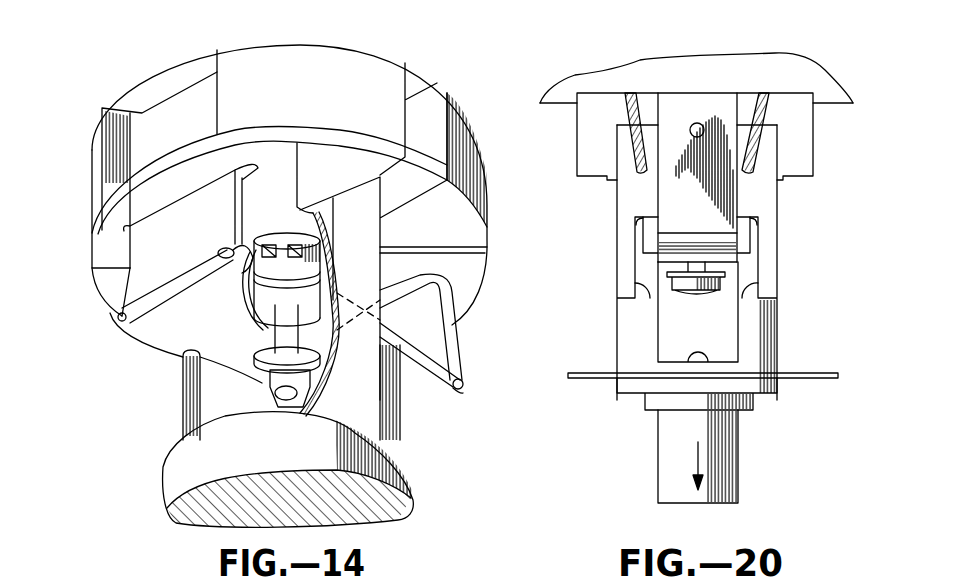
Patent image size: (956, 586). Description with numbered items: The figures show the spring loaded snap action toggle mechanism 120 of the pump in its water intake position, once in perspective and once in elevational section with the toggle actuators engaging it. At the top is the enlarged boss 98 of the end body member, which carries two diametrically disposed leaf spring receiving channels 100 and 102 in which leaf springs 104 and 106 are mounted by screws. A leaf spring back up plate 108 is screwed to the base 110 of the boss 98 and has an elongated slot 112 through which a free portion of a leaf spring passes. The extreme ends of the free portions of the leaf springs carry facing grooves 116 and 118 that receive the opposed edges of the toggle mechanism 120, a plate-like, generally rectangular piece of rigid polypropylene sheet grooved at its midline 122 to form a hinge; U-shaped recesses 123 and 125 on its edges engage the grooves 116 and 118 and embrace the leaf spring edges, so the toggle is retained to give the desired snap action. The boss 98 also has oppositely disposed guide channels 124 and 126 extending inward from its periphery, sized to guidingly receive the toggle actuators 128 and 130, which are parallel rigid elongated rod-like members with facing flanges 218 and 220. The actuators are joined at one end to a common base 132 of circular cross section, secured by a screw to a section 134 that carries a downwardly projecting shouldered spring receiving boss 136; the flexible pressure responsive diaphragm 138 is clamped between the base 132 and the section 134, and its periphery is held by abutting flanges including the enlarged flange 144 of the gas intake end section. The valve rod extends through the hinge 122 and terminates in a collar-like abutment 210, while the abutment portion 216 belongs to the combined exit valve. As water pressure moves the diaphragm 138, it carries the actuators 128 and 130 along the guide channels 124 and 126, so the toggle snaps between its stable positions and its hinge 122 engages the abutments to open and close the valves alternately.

In FIG. 14, the boss 98 is at (331, 102).
In FIG. 20, the boss 98 is at (815, 142).
In FIG. 14, the leaf spring receiving channel 100 is at (193, 93).
In FIG. 14, the leaf spring receiving channel 102 is at (447, 302).
In FIG. 14, the leaf spring 104 is at (197, 245).
In FIG. 14, the leaf spring 106 is at (455, 330).
In FIG. 14, the leaf spring back up plate 108 is at (113, 253).
In FIG. 14, the base of boss 110 is at (350, 176).
In FIG. 14, the elongated slot 112 is at (447, 292).
In FIG. 14, the groove 116 is at (257, 275).
In FIG. 14, the groove 118 is at (463, 388).
In FIG. 14, the spring loaded snap action toggle mechanism 120 is at (434, 394).
In FIG. 14, the midline hinge 122 is at (195, 360).
In FIG. 14, the U-shaped recess 123 is at (240, 232).
In FIG. 14, the guide channel 124 is at (430, 127).
In FIG. 20, the guide channel 124 is at (752, 100).
In FIG. 14, the U-shaped recess 125 is at (440, 392).
In FIG. 20, the guide channel 126 is at (640, 100).
In FIG. 14, the toggle actuator 128 is at (372, 252).
In FIG. 20, the toggle actuator 128 is at (627, 250).
In FIG. 14, the toggle actuator 130 is at (185, 430).
In FIG. 20, the toggle actuator 130 is at (768, 250).
In FIG. 14, the common base 132 is at (410, 470).
In FIG. 20, the common base 132 is at (778, 347).
In FIG. 20, the section 134 is at (780, 383).
In FIG. 20, the shouldered spring receiving boss 136 is at (740, 455).
In FIG. 20, the diaphragm 138 is at (613, 384).
In FIG. 14, the enlarged flange 144 is at (276, 133).
In FIG. 20, the collar-like abutment 210 is at (727, 273).
In FIG. 14, the abutment portion 216 is at (250, 305).
In FIG. 20, the facing flange 218 is at (638, 228).
In FIG. 20, the facing flange 220 is at (632, 283).